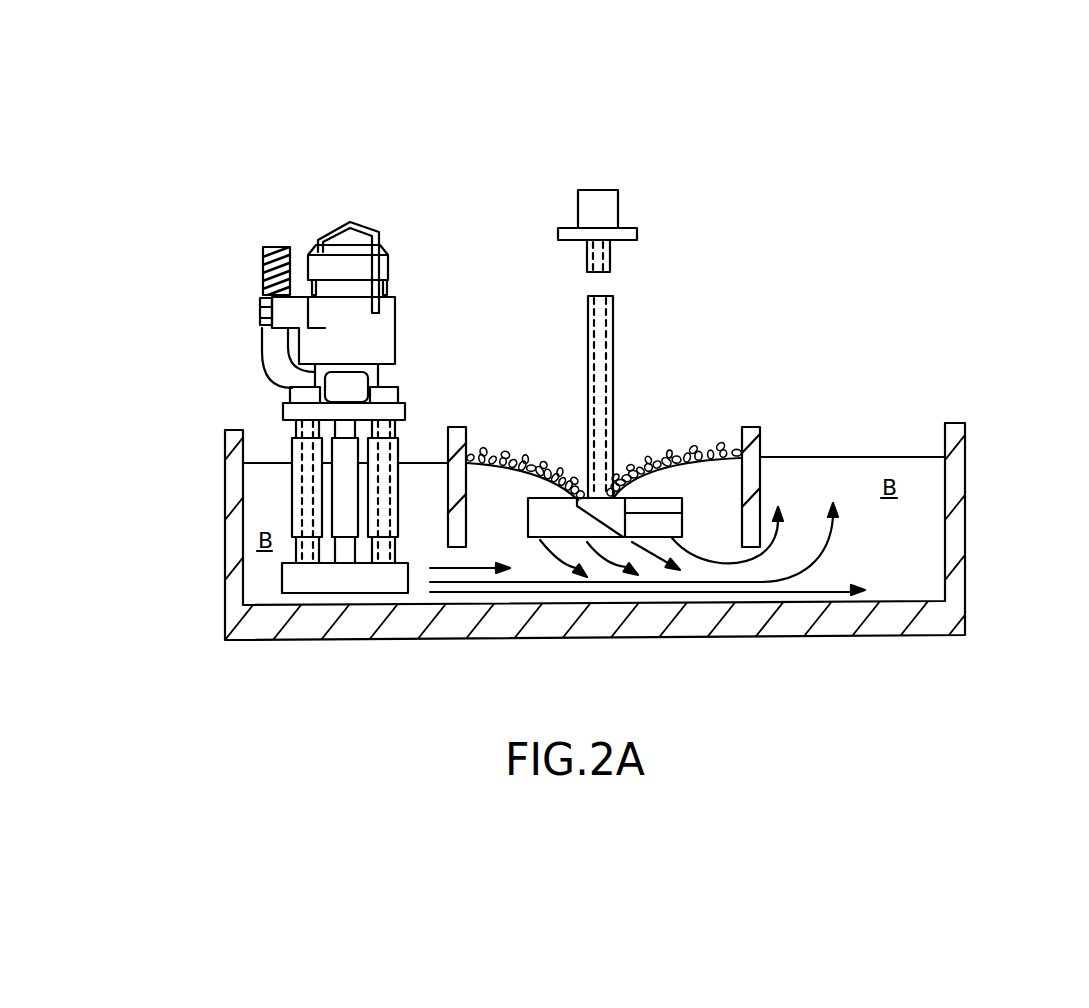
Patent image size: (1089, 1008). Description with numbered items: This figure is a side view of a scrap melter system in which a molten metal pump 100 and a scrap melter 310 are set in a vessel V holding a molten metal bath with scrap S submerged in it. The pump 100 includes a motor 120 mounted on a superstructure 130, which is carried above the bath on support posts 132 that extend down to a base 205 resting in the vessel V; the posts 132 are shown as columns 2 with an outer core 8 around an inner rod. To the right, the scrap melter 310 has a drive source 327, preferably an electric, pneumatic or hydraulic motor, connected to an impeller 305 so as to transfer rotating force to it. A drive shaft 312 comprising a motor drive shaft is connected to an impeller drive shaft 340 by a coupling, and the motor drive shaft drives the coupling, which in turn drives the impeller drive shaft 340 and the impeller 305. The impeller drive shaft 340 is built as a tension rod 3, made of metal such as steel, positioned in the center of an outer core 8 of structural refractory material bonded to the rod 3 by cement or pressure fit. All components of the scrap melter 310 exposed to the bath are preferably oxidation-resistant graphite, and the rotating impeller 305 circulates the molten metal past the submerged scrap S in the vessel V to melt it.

The molten metal pump 100 is at (428, 234).
The motor 120 is at (383, 340).
The superstructure 130 is at (283, 407).
The support posts 132 is at (290, 468).
The column 2 is at (307, 450).
The outer core 8 is at (288, 480).
The base 205 is at (290, 578).
The scrap melter 310 is at (690, 340).
The drive shaft 312 is at (634, 255).
The drive source 327 is at (618, 207).
The impeller drive shaft 340 is at (587, 369).
The impeller 305 is at (673, 522).
The tension rod 3 is at (597, 258).
The scrap S is at (501, 450).
The vessel V is at (989, 475).